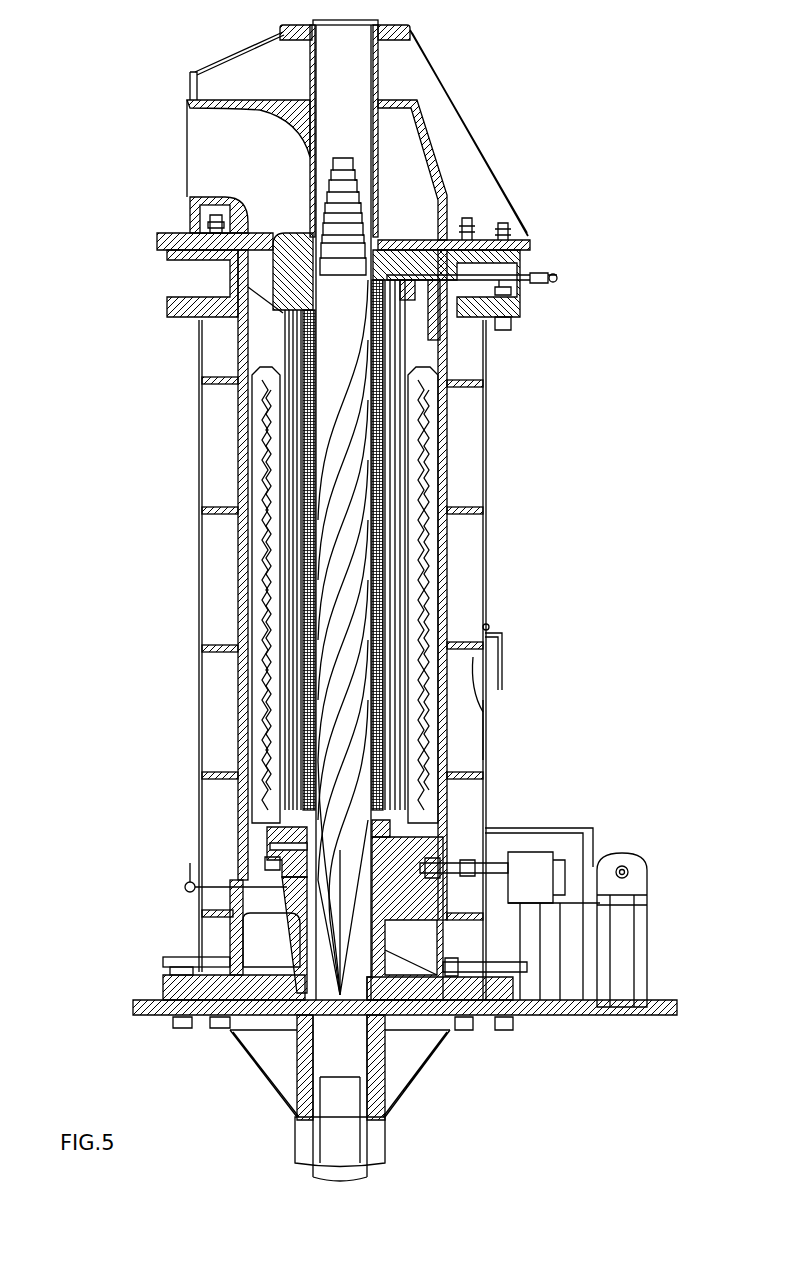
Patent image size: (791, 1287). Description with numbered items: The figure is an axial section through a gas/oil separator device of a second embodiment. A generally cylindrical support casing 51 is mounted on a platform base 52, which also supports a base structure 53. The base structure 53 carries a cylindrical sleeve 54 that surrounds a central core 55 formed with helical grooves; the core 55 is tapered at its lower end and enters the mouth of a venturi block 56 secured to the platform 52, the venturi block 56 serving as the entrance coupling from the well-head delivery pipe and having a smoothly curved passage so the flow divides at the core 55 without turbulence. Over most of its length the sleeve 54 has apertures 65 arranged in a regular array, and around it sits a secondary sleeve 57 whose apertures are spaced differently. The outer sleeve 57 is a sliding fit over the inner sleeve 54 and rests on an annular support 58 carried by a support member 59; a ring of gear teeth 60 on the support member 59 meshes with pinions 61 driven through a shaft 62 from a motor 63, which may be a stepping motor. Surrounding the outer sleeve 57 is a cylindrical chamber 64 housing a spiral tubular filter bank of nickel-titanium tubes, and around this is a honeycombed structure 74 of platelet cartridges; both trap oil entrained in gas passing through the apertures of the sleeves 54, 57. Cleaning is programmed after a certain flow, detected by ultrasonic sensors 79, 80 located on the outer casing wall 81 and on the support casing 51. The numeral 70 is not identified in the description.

The support casing 51 is at (243, 566).
The platform base 52 is at (160, 1013).
The base structure 53 is at (437, 897).
The cylindrical sleeve 54 is at (303, 483).
The central core 55 is at (352, 593).
The venturi block 56 is at (377, 1062).
The secondary sleeve 57 is at (303, 682).
The annular support 58 is at (297, 823).
The support member 59 is at (273, 843).
The ring of gear teeth 60 is at (270, 863).
The pinions 61 is at (440, 898).
The shaft 62 is at (433, 860).
The motor 63 is at (532, 860).
The cylindrical chamber 64 is at (388, 463).
The apertures 65 is at (307, 705).
The left heating element 70 is at (255, 412).
The honeycombed structure 74 is at (433, 540).
The ultrasonic sensor 79 is at (487, 623).
The ultrasonic sensor 80 is at (483, 712).
The outer casing wall 81 is at (483, 728).